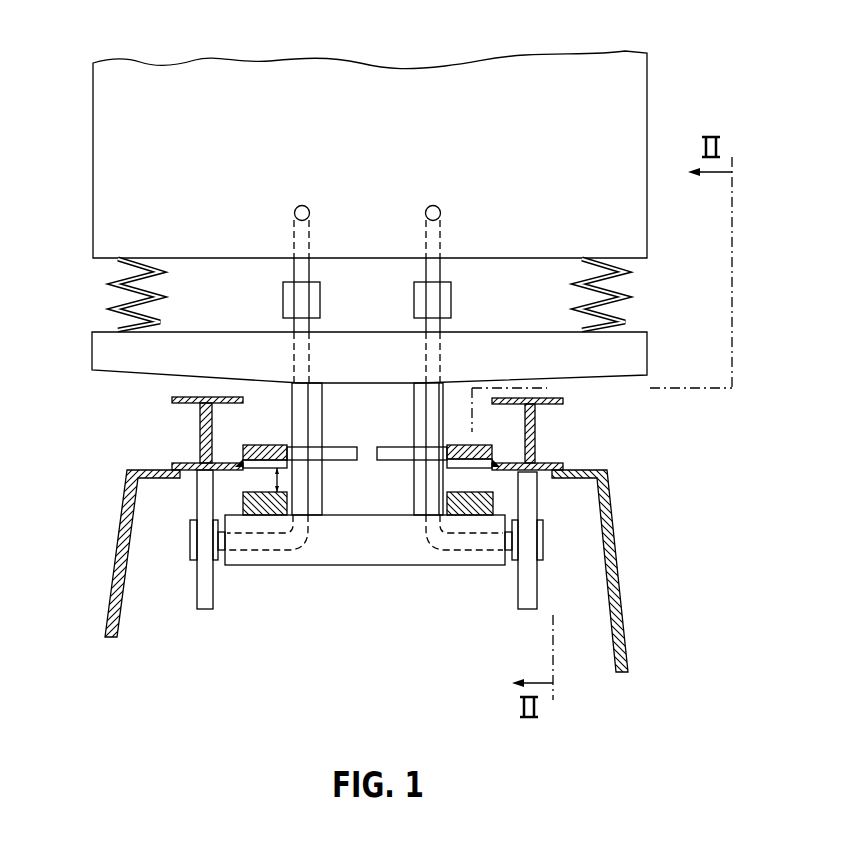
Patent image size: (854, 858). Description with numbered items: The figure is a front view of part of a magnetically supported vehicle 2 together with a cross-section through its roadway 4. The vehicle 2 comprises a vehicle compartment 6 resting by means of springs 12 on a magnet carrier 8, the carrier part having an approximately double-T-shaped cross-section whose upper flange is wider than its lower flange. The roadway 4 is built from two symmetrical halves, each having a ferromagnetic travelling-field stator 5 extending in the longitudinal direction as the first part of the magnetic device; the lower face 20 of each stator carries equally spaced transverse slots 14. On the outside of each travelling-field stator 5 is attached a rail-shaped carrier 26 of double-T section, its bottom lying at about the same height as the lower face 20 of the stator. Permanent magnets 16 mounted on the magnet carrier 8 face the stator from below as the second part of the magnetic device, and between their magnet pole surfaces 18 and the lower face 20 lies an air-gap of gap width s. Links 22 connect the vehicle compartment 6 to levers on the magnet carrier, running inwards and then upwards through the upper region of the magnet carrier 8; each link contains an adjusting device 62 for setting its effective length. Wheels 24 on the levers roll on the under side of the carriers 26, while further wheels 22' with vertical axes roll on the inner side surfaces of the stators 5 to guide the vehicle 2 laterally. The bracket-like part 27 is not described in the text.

The vehicle 2 is at (107, 306).
The roadway 4 is at (500, 452).
The travelling-field stator 5 is at (462, 445).
The vehicle compartment 6 is at (262, 177).
The magnet carrier 8 is at (381, 422).
The springs 12 is at (582, 288).
The slots 14 is at (462, 464).
The permanent magnets 16 is at (462, 503).
The magnet pole surfaces 18 is at (260, 488).
The lower face of travelling-field stator 20 is at (257, 470).
The link 22 is at (361, 295).
The wheels with vertical axes 22' is at (347, 449).
The wheel 24 is at (205, 595).
The rail-shaped carrier 26 is at (200, 430).
The angled bracket leg 27 is at (122, 545).
The adjusting device 62 is at (420, 302).
The gap width s is at (283, 483).